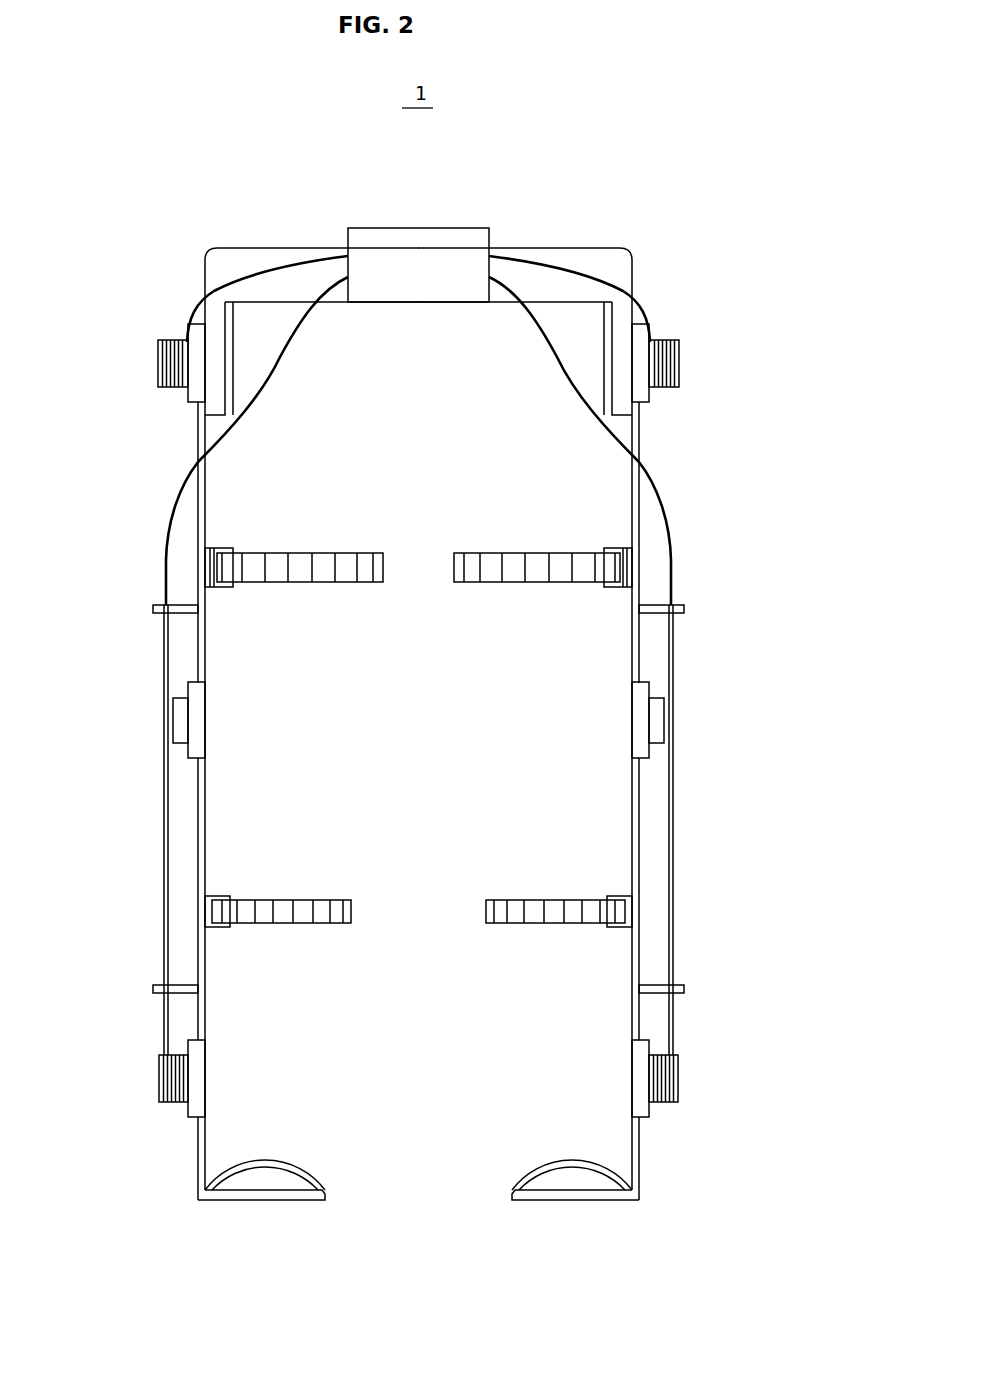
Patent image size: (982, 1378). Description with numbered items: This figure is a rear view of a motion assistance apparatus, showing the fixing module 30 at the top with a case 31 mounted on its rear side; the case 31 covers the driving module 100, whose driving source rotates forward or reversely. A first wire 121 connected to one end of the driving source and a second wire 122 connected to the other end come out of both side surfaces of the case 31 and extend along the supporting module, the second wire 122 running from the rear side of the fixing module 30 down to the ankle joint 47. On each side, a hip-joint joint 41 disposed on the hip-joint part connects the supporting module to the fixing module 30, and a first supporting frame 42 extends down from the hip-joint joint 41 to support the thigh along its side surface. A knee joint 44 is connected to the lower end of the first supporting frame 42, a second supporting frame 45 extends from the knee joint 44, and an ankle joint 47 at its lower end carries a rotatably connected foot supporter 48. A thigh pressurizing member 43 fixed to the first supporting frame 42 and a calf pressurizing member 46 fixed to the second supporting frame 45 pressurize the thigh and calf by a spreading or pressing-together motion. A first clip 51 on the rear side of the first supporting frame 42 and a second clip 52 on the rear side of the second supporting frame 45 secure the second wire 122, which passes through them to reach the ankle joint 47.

The driving module 100 is at (474, 193).
The fixing module 30 is at (212, 265).
The case 31 is at (415, 290).
The first wire 121 is at (278, 268).
The second wire 122 is at (282, 360).
The hip-joint joint 41 is at (157, 363).
The first supporting frame 42 is at (197, 510).
The thigh pressurizing member 43 is at (299, 563).
The knee joint 44 is at (173, 720).
The second supporting frame 45 is at (197, 830).
The calf pressurizing member 46 is at (282, 908).
The ankle joint 47 is at (157, 1078).
The foot supporter 48 is at (297, 1167).
The first clip 51 is at (152, 608).
The second clip 52 is at (152, 990).